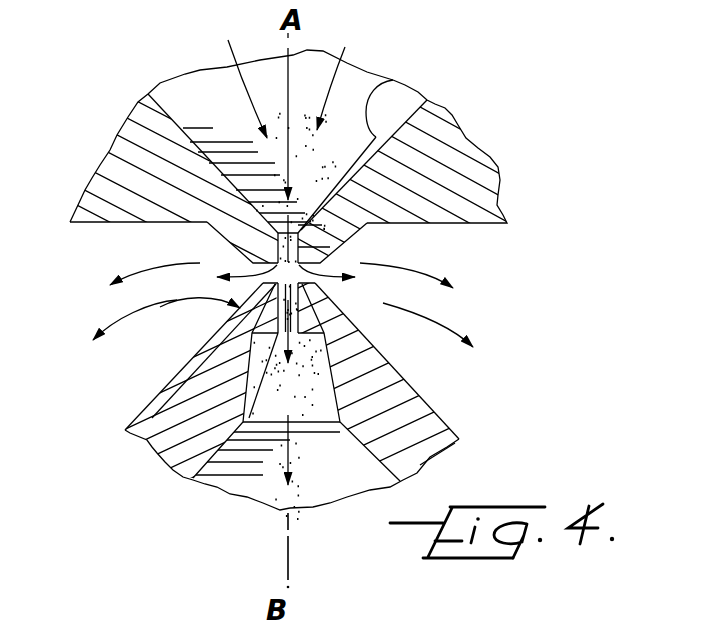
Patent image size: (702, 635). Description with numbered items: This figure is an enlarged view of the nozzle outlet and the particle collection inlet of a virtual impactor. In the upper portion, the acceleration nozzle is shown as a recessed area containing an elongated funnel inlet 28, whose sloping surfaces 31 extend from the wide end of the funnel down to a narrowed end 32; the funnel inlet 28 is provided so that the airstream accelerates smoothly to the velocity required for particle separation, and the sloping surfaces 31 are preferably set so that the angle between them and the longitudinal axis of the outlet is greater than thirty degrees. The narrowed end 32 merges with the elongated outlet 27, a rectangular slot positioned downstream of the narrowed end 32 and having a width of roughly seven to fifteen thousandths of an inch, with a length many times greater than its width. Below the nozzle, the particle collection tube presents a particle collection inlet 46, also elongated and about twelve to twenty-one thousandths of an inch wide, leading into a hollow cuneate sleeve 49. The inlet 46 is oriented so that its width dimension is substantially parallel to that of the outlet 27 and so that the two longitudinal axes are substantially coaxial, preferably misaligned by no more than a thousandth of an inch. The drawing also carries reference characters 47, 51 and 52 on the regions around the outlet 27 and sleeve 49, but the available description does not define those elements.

The elongated funnel inlet 28 is at (227, 107).
The sloping surfaces 31 is at (393, 80).
The narrowed end 32 is at (288, 232).
The elongated outlet 27 is at (338, 243).
The nozzle tip outlet 47 is at (247, 262).
The particle collection inlet 46 is at (300, 289).
The spray flow streams 52 is at (283, 305).
The lower die block 51 is at (146, 410).
The hollow cuneate sleeve 49 is at (430, 392).